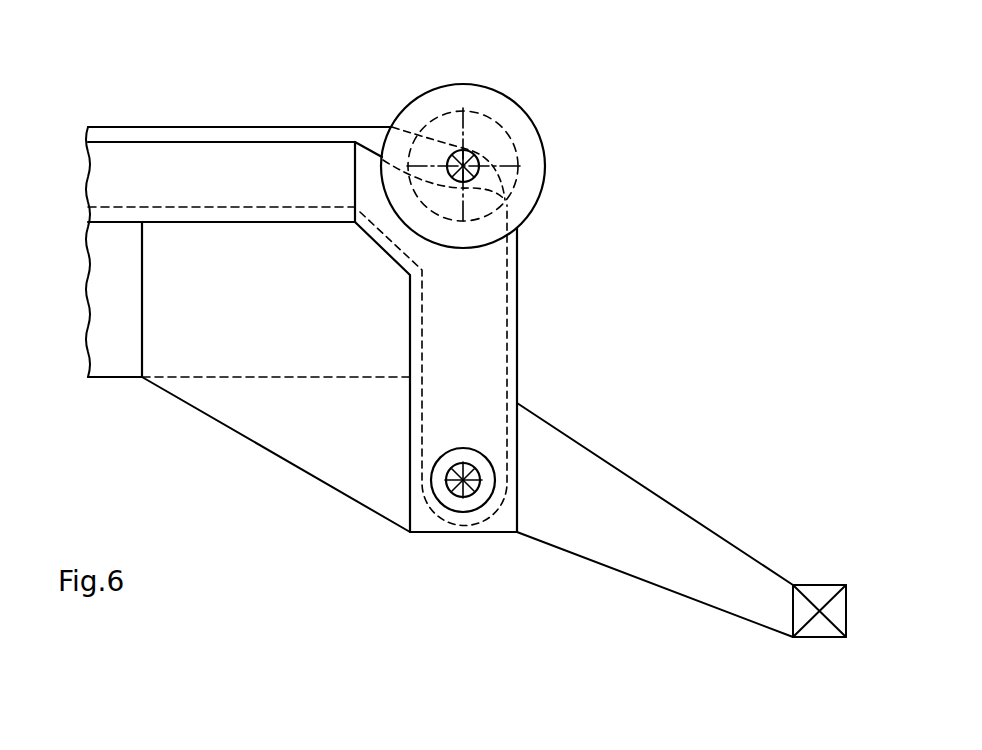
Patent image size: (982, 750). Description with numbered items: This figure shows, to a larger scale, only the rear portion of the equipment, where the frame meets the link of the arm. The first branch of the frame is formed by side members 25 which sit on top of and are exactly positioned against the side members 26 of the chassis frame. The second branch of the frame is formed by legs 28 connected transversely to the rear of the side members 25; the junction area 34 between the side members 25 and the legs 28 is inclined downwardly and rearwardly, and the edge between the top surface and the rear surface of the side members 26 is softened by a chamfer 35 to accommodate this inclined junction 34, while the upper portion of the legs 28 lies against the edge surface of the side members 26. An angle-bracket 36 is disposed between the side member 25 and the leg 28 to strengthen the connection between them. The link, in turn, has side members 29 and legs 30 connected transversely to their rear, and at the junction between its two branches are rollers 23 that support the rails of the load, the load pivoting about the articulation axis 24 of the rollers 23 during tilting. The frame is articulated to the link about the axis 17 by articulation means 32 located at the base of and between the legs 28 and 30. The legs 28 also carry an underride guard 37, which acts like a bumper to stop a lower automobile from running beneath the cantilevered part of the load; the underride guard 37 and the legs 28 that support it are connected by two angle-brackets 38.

The axis 17 is at (468, 487).
The rollers 23 is at (497, 102).
The articulation axis 24 is at (467, 158).
The side members 25 is at (213, 161).
The side members of the chassis frame 26 is at (113, 368).
The legs 28 is at (493, 358).
The side members 29 is at (141, 135).
The legs 30 is at (507, 298).
The articulation means 32 is at (435, 518).
The junction area 34 is at (398, 233).
The chamfer 35 is at (362, 230).
The angle-bracket 36 is at (280, 462).
The underride guard 37 is at (822, 628).
The angle-brackets 38 is at (637, 565).